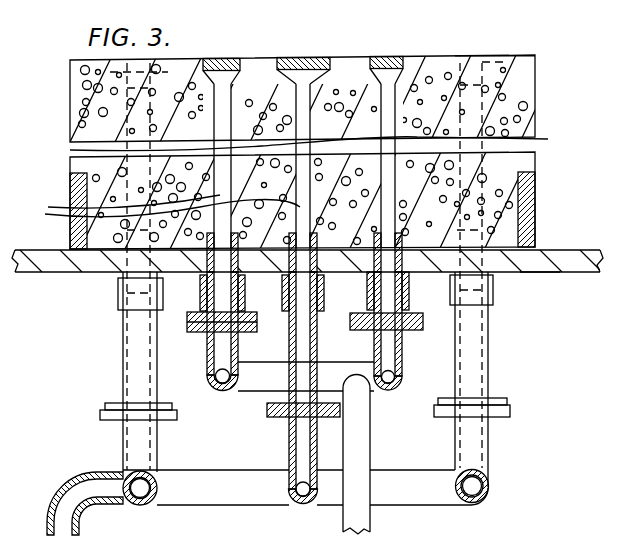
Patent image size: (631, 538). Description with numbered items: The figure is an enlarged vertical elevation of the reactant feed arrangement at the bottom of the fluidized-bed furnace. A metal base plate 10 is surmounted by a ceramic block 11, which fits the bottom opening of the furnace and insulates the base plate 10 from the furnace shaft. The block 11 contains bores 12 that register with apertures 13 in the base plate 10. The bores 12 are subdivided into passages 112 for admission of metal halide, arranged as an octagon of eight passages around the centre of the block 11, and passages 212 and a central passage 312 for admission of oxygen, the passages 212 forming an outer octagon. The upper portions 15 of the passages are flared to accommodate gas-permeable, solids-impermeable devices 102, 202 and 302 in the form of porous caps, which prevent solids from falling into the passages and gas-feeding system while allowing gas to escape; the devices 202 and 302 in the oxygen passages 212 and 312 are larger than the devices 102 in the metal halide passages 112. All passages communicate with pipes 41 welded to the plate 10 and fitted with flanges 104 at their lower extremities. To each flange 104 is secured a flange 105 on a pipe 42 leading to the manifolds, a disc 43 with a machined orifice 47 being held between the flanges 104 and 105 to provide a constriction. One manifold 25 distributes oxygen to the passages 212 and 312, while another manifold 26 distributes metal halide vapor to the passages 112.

The metal base plate 10 is at (561, 270).
The ceramic block 11 is at (530, 165).
The bores 12 is at (160, 208).
The apertures 13 is at (546, 262).
The upper portions of the passages 15 is at (534, 73).
The manifold 25 is at (430, 490).
The manifold 26 is at (360, 450).
The pipes 41 is at (327, 285).
The pipe 42 is at (457, 438).
The disc 43 is at (240, 428).
The machined orifice 47 is at (269, 367).
The gas-permeable solids-impermeable device 102 is at (409, 56).
The flange 104 is at (449, 356).
The flange 105 is at (438, 412).
The passages 112 is at (387, 113).
The gas-permeable solids-impermeable device 202 is at (458, 55).
The passages 212 is at (510, 210).
The gas-permeable solids-impermeable device 302 is at (329, 57).
The passage 312 is at (332, 144).